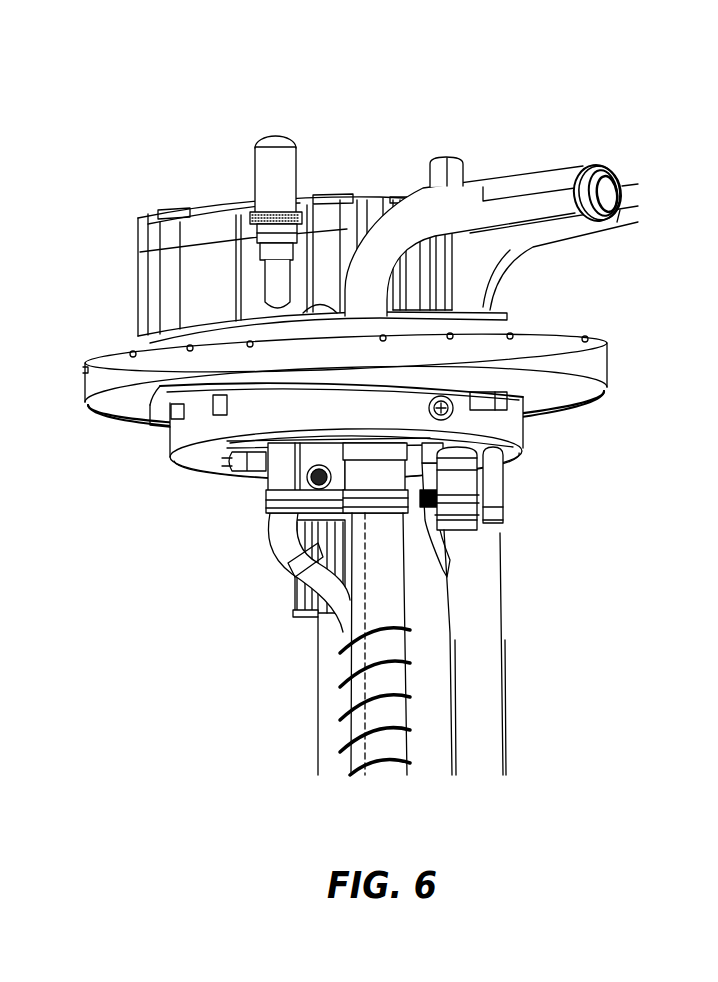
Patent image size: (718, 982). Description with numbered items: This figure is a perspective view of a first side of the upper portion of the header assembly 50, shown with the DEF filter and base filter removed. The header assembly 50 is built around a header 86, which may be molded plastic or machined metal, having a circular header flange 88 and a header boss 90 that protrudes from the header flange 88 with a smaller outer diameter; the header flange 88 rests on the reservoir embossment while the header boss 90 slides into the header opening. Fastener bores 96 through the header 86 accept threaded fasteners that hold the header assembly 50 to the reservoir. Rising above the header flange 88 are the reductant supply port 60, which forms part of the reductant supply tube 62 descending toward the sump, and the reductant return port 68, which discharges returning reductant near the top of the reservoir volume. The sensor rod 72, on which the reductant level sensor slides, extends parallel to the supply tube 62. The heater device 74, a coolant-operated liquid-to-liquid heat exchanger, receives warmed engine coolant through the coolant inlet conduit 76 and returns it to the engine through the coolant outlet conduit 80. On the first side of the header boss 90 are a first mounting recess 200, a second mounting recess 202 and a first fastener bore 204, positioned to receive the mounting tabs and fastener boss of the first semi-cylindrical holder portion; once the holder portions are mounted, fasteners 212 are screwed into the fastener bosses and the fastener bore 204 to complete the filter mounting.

The header assembly 50 is at (333, 108).
The reductant supply port 60 is at (445, 160).
The reductant supply tube 62 is at (433, 548).
The reductant return port 68 is at (262, 176).
The sensor rod 72 is at (330, 682).
The heater device 74 is at (478, 700).
The coolant inlet conduit 76 is at (512, 253).
The coolant outlet conduit 80 is at (542, 178).
The header 86 is at (118, 342).
The header flange 88 is at (592, 365).
The header boss 90 is at (271, 423).
The fastener bores 96 is at (607, 392).
The first mounting recess 200 is at (523, 409).
The second mounting recess 202 is at (170, 424).
The first fastener bore 204 is at (456, 412).
The fasteners 212 is at (522, 447).